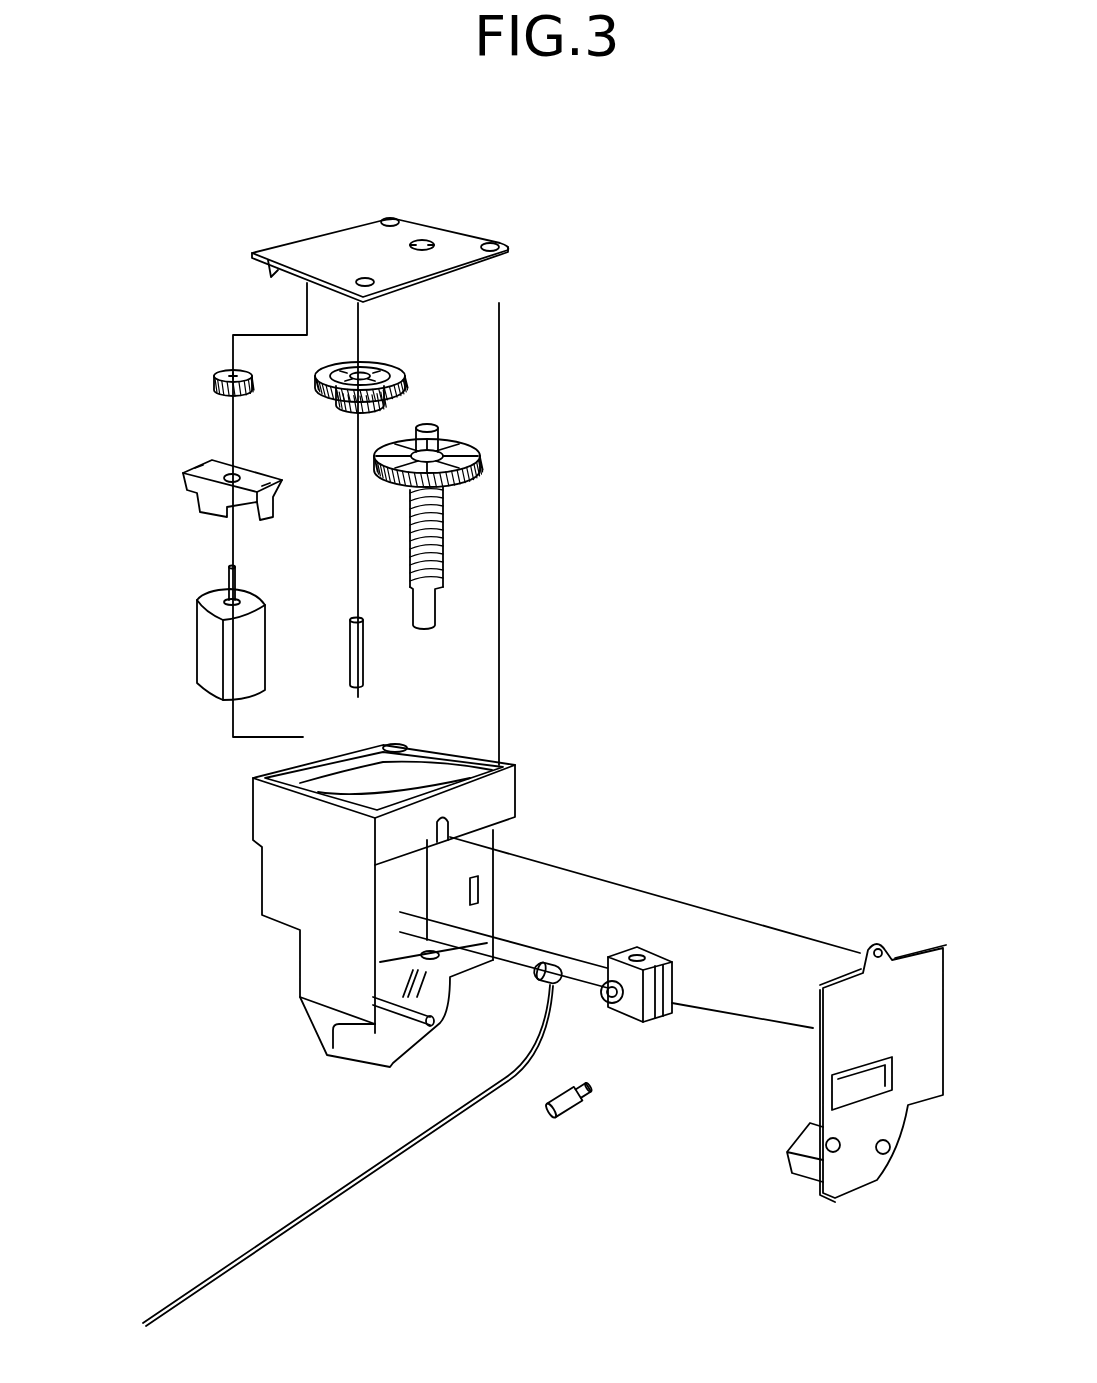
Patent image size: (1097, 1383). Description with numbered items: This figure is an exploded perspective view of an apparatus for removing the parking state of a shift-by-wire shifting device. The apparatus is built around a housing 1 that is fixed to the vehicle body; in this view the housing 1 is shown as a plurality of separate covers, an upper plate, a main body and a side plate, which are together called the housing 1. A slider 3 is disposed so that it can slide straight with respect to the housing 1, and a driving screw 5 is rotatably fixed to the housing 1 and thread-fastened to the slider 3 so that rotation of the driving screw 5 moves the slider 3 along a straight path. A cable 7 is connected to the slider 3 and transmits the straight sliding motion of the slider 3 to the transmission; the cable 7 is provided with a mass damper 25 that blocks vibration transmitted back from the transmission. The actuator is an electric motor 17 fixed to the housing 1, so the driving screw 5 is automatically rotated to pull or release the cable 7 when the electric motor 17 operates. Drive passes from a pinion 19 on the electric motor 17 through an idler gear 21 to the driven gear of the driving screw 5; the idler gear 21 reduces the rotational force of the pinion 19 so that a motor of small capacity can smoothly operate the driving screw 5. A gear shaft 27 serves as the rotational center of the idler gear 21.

The housing 1 is at (472, 245).
The slider 3 is at (648, 947).
The driving screw 5 is at (443, 520).
The cable 7 is at (357, 1192).
The electric motor 17 is at (212, 648).
The pinion 19 is at (226, 369).
The idler gear 21 is at (403, 372).
The mass damper 25 is at (577, 1107).
The gear shaft 27 is at (363, 667).